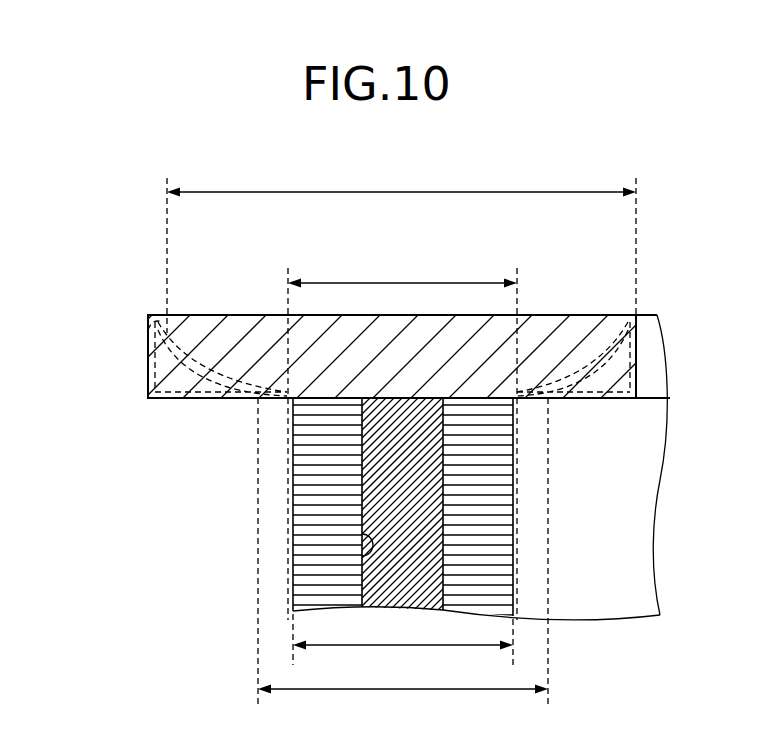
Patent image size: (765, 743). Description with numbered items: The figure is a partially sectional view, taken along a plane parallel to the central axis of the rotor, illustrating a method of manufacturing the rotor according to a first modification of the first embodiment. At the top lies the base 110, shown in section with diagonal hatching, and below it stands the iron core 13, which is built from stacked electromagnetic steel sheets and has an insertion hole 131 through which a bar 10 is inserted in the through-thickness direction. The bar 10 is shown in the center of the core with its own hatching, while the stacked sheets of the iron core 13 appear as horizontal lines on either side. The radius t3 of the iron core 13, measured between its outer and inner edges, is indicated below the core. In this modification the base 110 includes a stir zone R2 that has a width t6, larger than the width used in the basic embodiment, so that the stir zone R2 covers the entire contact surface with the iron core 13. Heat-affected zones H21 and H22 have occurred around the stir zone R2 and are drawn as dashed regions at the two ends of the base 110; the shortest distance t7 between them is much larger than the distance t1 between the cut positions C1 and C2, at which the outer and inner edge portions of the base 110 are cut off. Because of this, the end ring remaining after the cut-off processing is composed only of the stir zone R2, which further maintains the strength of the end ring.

The base 110 is at (148, 362).
The heat-affected zone H21 is at (147, 330).
The heat-affected zone H22 is at (606, 362).
The stir zone R2 is at (207, 323).
The cut position C1 is at (286, 297).
The cut position C2 is at (519, 297).
The iron core 13 is at (290, 462).
The bar 10 is at (382, 503).
The insertion hole 131 is at (362, 556).
The width of stir zone R2 t6 is at (401, 247).
The distance between cut positions t1 is at (402, 270).
The radius of iron core t3 is at (403, 645).
The shortest distance between heat-affected zones t7 is at (403, 558).